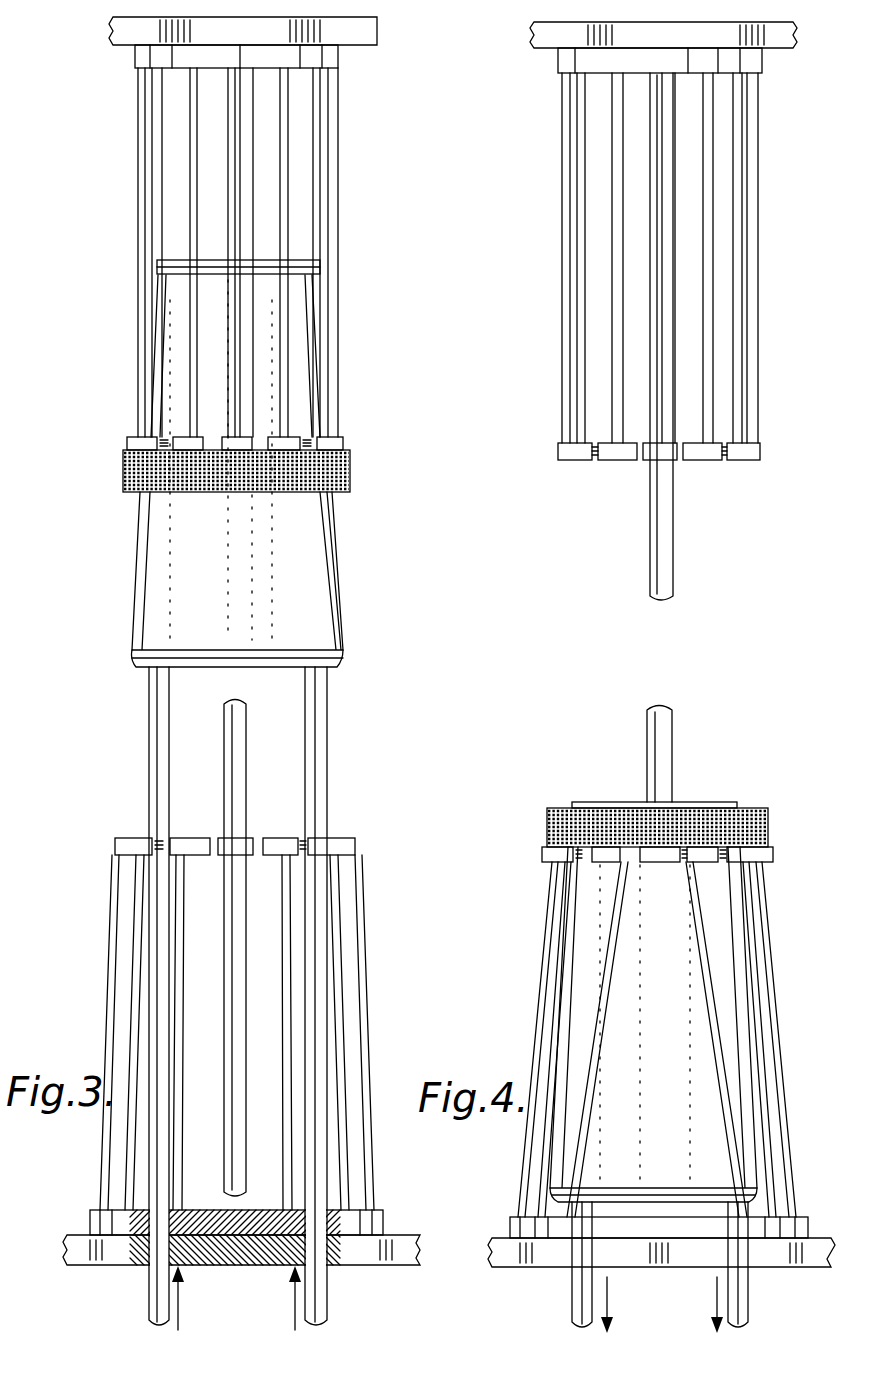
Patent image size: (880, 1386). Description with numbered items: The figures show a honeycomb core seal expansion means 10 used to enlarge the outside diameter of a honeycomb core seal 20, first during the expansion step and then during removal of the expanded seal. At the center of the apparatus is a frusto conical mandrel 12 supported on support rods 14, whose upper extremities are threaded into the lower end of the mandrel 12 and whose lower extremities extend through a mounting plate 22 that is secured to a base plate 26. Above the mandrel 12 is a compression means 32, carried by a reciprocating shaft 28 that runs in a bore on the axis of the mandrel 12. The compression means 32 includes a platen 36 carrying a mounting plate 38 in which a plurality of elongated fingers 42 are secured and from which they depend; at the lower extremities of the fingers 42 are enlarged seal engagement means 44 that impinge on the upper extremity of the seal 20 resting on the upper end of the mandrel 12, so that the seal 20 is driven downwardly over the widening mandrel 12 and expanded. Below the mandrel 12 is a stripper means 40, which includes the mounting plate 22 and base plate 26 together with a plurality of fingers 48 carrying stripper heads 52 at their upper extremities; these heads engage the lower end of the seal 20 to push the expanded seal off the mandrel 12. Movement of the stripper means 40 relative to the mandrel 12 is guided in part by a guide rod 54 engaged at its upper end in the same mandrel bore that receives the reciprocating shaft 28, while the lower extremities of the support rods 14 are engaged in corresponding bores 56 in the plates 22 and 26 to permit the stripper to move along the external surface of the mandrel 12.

In FIG. 3, the honeycomb core seal expansion means 10 is at (355, 605).
In FIG. 3, the frusto conical mandrel 12 is at (135, 575).
In FIG. 4, the frusto conical mandrel 12 is at (590, 1047).
In FIG. 3, the support rods 14 is at (150, 760).
In FIG. 4, the support rods 14 is at (576, 1301).
In FIG. 3, the honeycomb core seal 20 is at (352, 470).
In FIG. 4, the honeycomb core seal 20 is at (548, 820).
In FIG. 3, the mounting plate 22 is at (385, 1215).
In FIG. 4, the mounting plate 22 is at (806, 1220).
In FIG. 3, the base plate 26 is at (418, 1247).
In FIG. 4, the base plate 26 is at (830, 1248).
In FIG. 3, the reciprocating shaft 28 is at (253, 240).
In FIG. 4, the reciprocating shaft 28 is at (673, 583).
In FIG. 3, the compression means 32 is at (130, 313).
In FIG. 4, the compression means 32 is at (556, 320).
In FIG. 3, the platen 36 is at (376, 30).
In FIG. 4, the platen 36 is at (797, 40).
In FIG. 3, the mounting plate 38 is at (338, 60).
In FIG. 4, the mounting plate 38 is at (762, 70).
In FIG. 3, the stripper means 40 is at (100, 1040).
In FIG. 4, the stripper means 40 is at (790, 1050).
In FIG. 3, the elongated fingers 42 is at (240, 217).
In FIG. 4, the elongated fingers 42 is at (652, 254).
In FIG. 3, the seal engagement means 44 is at (221, 436).
In FIG. 4, the seal engagement means 44 is at (650, 460).
In FIG. 3, the fingers 48 is at (179, 1018).
In FIG. 4, the fingers 48 is at (618, 1005).
In FIG. 3, the stripper heads 52 is at (215, 836).
In FIG. 4, the stripper heads 52 is at (634, 870).
In FIG. 3, the guide rod 54 is at (255, 745).
In FIG. 4, the guide rod 54 is at (672, 746).
In FIG. 3, the bores 56 is at (150, 1268).